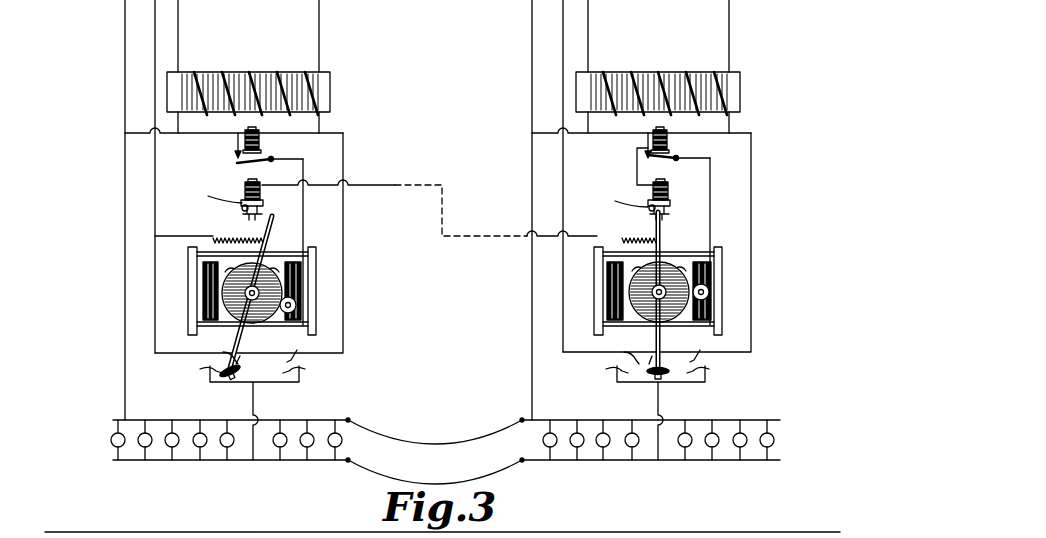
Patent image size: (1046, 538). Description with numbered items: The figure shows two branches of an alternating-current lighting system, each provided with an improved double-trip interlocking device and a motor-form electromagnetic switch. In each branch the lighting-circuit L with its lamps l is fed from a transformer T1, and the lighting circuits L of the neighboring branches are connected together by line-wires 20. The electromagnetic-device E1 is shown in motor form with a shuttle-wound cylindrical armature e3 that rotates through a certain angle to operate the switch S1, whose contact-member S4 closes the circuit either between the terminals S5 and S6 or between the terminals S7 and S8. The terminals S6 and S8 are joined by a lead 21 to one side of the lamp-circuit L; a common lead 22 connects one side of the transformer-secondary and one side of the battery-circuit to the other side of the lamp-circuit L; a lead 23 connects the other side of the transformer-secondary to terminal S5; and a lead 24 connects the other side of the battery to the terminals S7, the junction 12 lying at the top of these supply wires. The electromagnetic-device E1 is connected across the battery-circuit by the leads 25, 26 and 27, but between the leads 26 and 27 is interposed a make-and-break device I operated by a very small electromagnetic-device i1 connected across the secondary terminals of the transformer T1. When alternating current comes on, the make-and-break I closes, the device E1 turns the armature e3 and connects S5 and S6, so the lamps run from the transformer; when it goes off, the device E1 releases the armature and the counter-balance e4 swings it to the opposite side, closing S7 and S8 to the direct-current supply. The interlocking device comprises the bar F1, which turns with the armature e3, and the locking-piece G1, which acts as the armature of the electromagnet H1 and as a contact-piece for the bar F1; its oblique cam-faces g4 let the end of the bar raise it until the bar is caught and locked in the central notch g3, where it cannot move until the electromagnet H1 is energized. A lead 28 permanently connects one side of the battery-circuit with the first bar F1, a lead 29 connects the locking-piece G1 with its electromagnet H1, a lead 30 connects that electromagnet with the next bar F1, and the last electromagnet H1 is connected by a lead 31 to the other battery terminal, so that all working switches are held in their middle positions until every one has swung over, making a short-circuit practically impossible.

The supply conductor junction 12 is at (128, 135).
The common lead 22 is at (125, 264).
The lead 24 is at (155, 313).
The lead 23 is at (343, 300).
The transformer T1 is at (331, 97).
The lead 27 is at (214, 131).
The electromagnetic-device i1 is at (259, 144).
The make-and-break device I is at (236, 164).
The lead 26 is at (305, 226).
The lead 31 is at (637, 170).
The lead 30 is at (361, 185).
The lead 28 is at (200, 236).
The electromagnet H1 is at (245, 190).
The locking-piece G1 is at (263, 212).
The lead 29 is at (417, 194).
The oblique cam-faces g4 is at (240, 212).
The central notch g3 is at (645, 239).
The bar F1 is at (274, 222).
The electromagnetic-device E1 is at (203, 292).
The shuttle-wound cylindrical armature e3 is at (261, 280).
The counter-balance e4 is at (297, 303).
The lead 25 is at (205, 353).
The terminal S7 is at (423, 350).
The contact-member S4 is at (441, 351).
The terminal S5 is at (493, 346).
The terminal S8 is at (404, 371).
The terminal S6 is at (505, 371).
The switch S1 is at (449, 361).
The lead 21 is at (253, 412).
The lighting-circuit L is at (113, 459).
The lamps l is at (220, 447).
The line-wires 20 is at (396, 480).